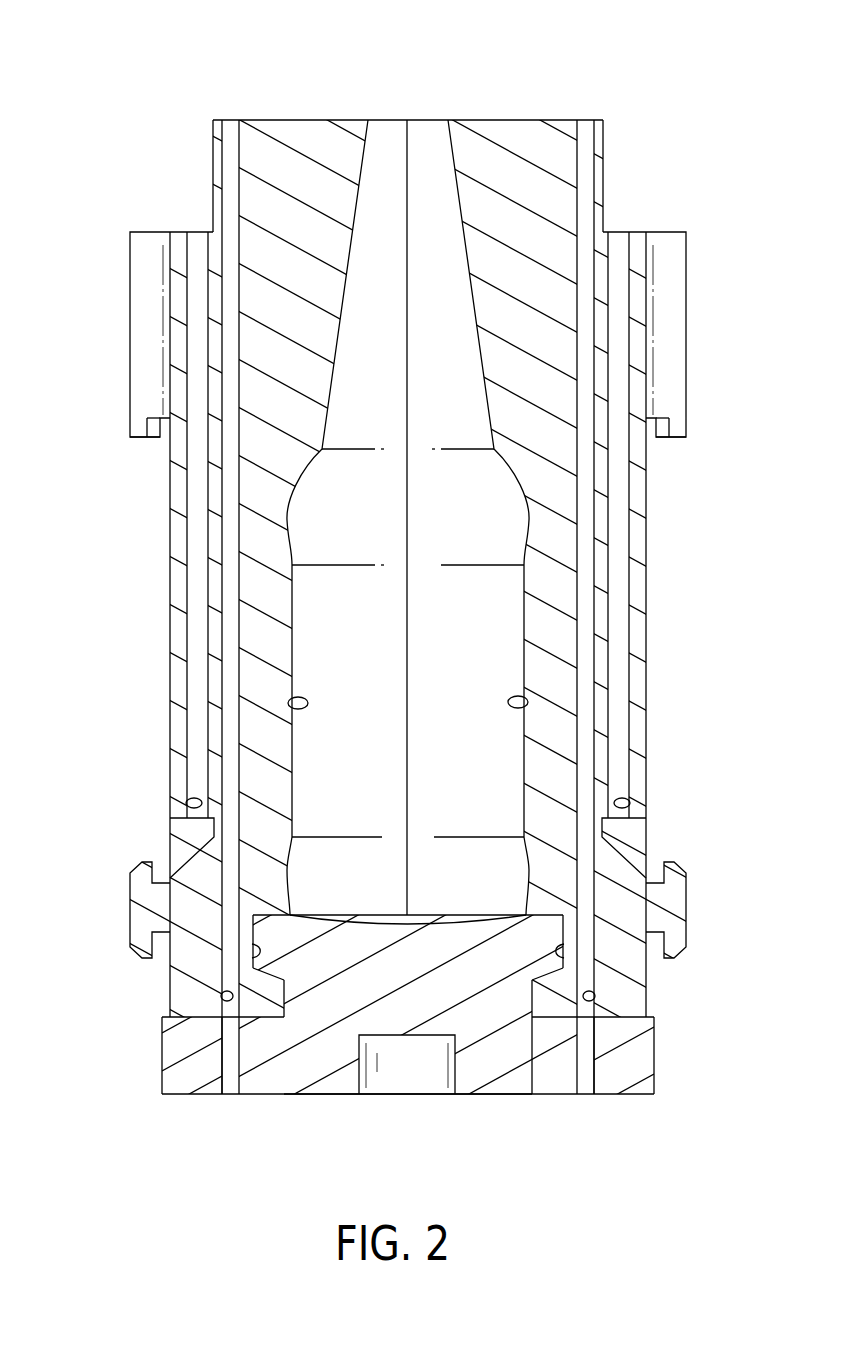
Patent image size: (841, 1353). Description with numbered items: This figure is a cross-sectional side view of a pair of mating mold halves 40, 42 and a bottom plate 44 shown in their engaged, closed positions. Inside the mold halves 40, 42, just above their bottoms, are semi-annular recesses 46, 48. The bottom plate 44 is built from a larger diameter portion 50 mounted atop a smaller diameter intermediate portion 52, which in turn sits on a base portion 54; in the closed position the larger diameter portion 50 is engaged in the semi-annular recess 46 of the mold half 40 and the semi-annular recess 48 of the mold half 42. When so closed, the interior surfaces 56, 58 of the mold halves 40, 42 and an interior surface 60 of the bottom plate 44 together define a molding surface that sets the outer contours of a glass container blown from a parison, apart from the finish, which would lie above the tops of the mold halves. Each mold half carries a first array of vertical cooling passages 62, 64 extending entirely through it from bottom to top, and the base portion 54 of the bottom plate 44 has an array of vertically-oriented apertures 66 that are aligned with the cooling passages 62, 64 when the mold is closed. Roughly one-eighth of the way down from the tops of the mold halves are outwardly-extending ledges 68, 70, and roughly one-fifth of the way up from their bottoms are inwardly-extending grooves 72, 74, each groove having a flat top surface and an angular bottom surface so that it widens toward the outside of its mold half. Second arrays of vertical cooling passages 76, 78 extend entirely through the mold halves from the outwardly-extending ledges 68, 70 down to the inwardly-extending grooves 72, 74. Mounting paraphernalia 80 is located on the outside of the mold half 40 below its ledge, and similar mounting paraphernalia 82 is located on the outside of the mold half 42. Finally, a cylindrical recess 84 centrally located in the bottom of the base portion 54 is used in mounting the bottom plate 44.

The mold half 40 is at (656, 683).
The mold half 42 is at (160, 683).
The bottom plate 44 is at (542, 1102).
The semi-annular recess 46 is at (564, 950).
The semi-annular recess 48 is at (252, 950).
The larger diameter portion 50 is at (287, 937).
The smaller diameter intermediate portion 52 is at (518, 1003).
The base portion 54 is at (636, 1057).
The interior surface 56 is at (520, 707).
The interior surface 58 is at (296, 707).
The interior surface 60 is at (388, 922).
The first array of vertical cooling passages 62 is at (578, 133).
The first array of vertical cooling passages 64 is at (238, 133).
The vertically-oriented apertures 66 is at (236, 1074).
The outwardly-extending ledge 68 is at (635, 232).
The outwardly-extending ledge 70 is at (181, 232).
The inwardly-extending groove 72 is at (645, 819).
The inwardly-extending groove 74 is at (171, 819).
The second array of vertical cooling passages 76 is at (610, 253).
The second array of vertical cooling passages 78 is at (206, 253).
The mounting paraphernalia 80 is at (681, 425).
The mounting paraphernalia 82 is at (135, 425).
The cylindrical recess 84 is at (447, 1067).